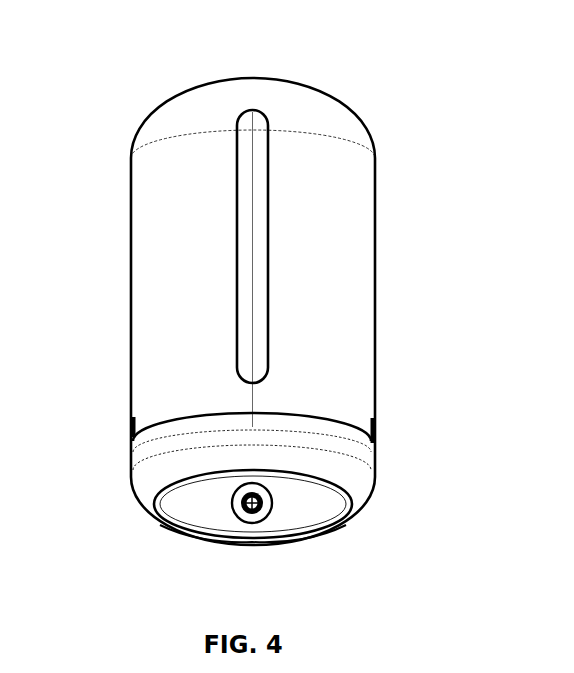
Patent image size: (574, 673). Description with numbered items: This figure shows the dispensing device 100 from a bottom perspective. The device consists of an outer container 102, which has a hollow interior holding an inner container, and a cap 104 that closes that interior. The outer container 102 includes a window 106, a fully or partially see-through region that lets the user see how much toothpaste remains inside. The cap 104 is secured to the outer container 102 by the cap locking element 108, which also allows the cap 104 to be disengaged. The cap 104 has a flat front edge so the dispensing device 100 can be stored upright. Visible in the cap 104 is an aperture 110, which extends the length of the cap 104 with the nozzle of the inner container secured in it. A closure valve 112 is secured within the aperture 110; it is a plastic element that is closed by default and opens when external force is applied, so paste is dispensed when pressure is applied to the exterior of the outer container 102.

The dispensing device 100 is at (106, 81).
The outer container 102 is at (340, 102).
The cap 104 is at (130, 478).
The window 106 is at (268, 200).
The cap locking element 108 is at (377, 430).
The aperture 110 is at (236, 514).
The closure valve 112 is at (262, 503).